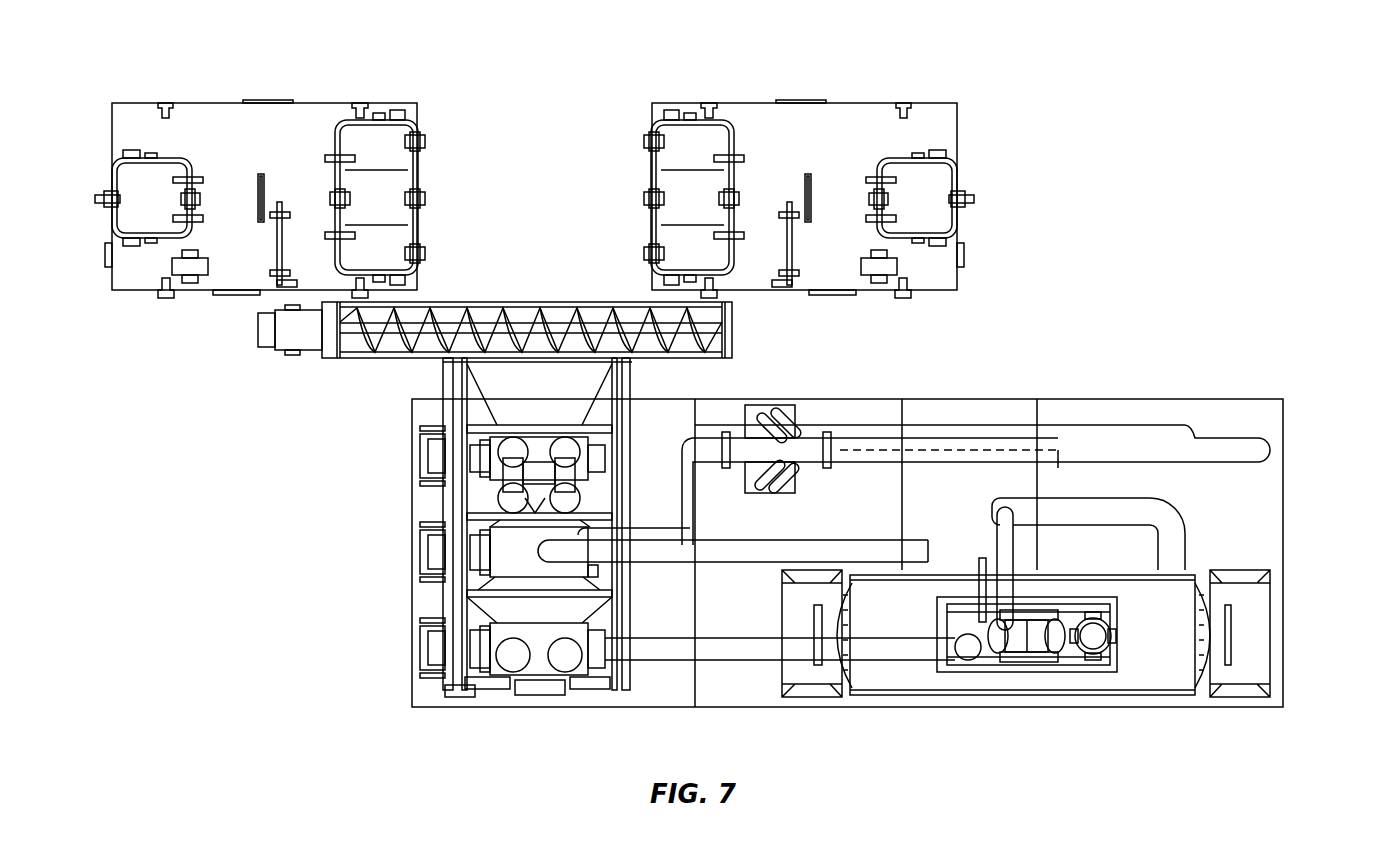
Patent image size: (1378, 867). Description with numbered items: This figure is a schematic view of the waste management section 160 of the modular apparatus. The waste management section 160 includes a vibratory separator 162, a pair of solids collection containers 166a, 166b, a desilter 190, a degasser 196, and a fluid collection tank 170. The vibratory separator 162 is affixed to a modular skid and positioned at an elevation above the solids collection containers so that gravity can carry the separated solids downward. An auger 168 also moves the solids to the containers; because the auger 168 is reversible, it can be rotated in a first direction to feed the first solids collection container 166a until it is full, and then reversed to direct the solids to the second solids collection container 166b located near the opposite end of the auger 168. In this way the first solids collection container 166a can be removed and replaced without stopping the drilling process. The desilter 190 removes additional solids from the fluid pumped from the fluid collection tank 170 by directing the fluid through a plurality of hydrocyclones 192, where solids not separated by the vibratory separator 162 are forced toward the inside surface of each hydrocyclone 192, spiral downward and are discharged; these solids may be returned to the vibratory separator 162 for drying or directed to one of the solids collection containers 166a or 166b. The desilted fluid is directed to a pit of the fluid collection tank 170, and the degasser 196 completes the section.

The waste management section 160 is at (1266, 94).
The vibratory separator 162 is at (512, 560).
The first solids collection container 166a is at (680, 103).
The second solids collection container 166b is at (140, 103).
The auger 168 is at (562, 302).
The fluid collection tank 170 is at (1260, 498).
The desilter 190 is at (772, 448).
The hydrocyclones 192 is at (786, 421).
The degasser 196 is at (1135, 673).